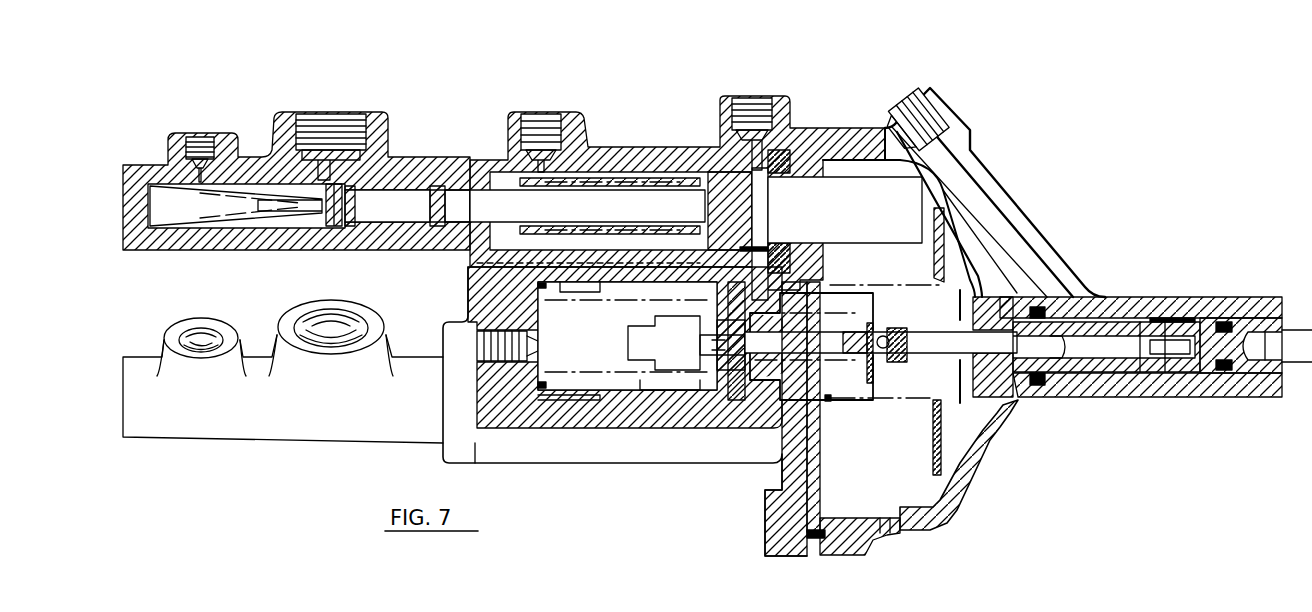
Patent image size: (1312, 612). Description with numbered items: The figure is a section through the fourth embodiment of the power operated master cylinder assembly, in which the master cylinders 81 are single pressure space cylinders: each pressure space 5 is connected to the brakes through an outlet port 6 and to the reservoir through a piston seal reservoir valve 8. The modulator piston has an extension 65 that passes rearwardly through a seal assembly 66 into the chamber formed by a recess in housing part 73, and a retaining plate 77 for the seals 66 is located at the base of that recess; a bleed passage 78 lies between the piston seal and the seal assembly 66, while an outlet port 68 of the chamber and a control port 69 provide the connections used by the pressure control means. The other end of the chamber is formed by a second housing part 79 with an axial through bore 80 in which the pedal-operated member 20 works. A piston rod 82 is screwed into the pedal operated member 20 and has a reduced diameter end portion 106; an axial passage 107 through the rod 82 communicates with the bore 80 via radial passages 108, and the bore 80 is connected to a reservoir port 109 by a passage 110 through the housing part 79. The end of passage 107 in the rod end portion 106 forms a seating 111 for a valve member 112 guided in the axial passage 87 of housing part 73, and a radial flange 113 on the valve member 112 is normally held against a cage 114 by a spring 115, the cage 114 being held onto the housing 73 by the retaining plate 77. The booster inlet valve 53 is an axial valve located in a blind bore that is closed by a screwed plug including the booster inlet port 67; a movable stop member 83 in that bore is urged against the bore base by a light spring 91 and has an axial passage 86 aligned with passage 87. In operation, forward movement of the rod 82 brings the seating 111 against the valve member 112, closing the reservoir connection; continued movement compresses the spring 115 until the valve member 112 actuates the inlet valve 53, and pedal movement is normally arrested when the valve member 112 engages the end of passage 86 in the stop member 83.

The pressure space 5 is at (178, 216).
The outlet port 6 is at (199, 136).
The piston seal reservoir valve 8 is at (317, 178).
The pedal-operated member 20 is at (1252, 360).
The booster inlet valve 53 is at (614, 348).
The extension 65 is at (858, 222).
The seal assembly 66 is at (793, 156).
The booster inlet port 67 is at (476, 323).
The outlet port 68 is at (884, 534).
The control port 69 is at (540, 135).
The housing part 73 is at (785, 538).
The retaining plate 77 is at (815, 515).
The bleed passage 78 is at (753, 104).
The second housing part 79 is at (987, 455).
The axial through bore 80 is at (1177, 317).
The master cylinder 81 is at (278, 415).
The piston rod 82 is at (1123, 365).
The stop member 83 is at (688, 403).
The axial passage 86 is at (717, 322).
The axial passage 87 is at (733, 370).
The light spring 91 is at (542, 383).
The reduced diameter end portion 106 is at (928, 354).
The axial passage 107 is at (1067, 350).
The radial passages 108 is at (1148, 360).
The reservoir port 109 is at (908, 122).
The passage 110 is at (1018, 243).
The seating 111 is at (903, 330).
The valve member 112 is at (860, 373).
The radial flange 113 is at (873, 384).
The cage 114 is at (840, 392).
The spring 115 is at (862, 318).